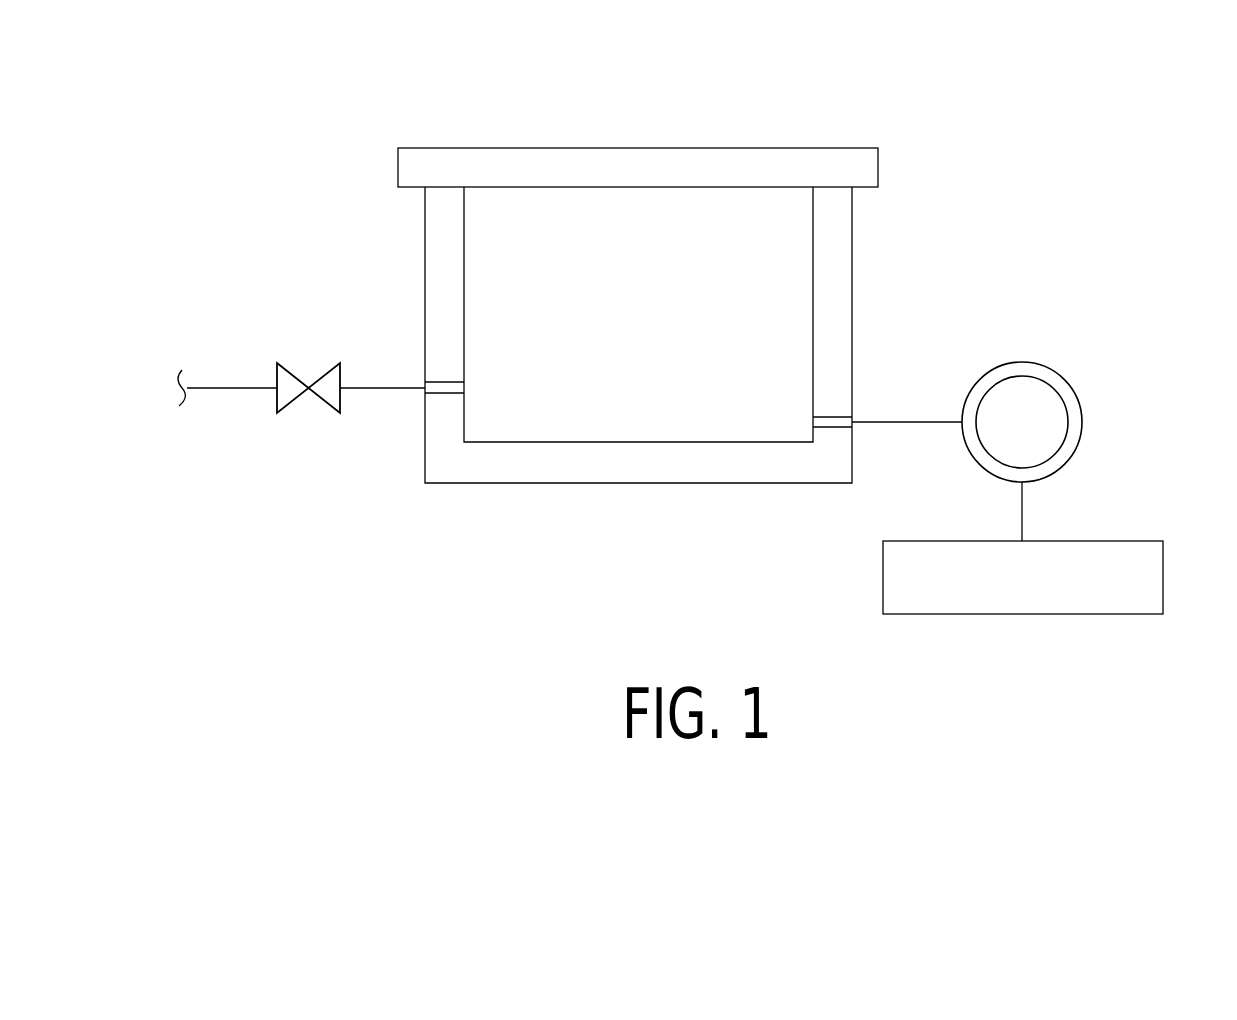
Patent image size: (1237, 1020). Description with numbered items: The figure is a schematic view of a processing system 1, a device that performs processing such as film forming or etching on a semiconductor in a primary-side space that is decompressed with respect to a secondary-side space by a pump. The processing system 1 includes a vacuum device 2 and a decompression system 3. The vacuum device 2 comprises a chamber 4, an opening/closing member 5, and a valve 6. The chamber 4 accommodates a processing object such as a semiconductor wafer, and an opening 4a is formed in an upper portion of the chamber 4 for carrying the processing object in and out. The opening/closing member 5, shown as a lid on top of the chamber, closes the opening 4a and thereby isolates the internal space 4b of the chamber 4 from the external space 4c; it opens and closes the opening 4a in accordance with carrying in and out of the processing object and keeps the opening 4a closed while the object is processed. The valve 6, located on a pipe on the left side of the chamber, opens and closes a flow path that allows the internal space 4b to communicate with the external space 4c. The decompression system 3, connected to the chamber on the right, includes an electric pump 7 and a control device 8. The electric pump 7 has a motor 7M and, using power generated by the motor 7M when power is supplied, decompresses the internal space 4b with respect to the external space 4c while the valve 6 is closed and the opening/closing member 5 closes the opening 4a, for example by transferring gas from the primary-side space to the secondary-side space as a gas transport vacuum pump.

The processing system 1 is at (977, 82).
The vacuum device 2 is at (232, 168).
The decompression system 3 is at (1196, 470).
The chamber 4 is at (425, 232).
The opening 4a is at (464, 228).
The internal space 4b is at (652, 327).
The external space 4c is at (390, 327).
The opening/closing member 5 is at (398, 160).
The valve 6 is at (318, 365).
The electric pump 7 is at (1082, 455).
The motor 7M is at (1069, 418).
The control device 8 is at (1095, 541).